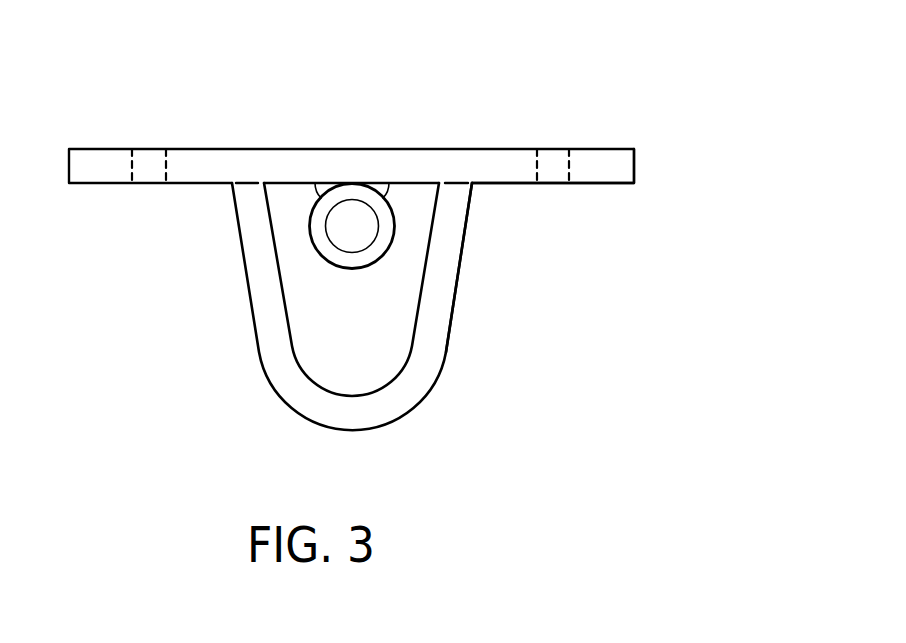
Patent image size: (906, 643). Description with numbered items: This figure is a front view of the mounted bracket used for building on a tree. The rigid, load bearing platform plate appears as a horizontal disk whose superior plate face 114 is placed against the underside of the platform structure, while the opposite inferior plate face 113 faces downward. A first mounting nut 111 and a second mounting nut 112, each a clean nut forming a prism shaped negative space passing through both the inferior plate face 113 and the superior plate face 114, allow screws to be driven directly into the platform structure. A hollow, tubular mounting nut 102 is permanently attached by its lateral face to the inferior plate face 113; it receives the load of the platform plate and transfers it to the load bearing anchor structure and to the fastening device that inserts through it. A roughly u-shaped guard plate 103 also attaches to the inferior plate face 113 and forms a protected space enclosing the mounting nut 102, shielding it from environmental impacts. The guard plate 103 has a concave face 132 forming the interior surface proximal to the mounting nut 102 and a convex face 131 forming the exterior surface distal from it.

The mounting nut 102 is at (342, 230).
The guard plate 103 is at (262, 370).
The first mounting nut 111 is at (157, 165).
The second mounting nut 112 is at (562, 160).
The inferior plate face 113 is at (499, 183).
The superior plate face 114 is at (449, 148).
The convex face 131 is at (447, 352).
The concave face 132 is at (292, 348).